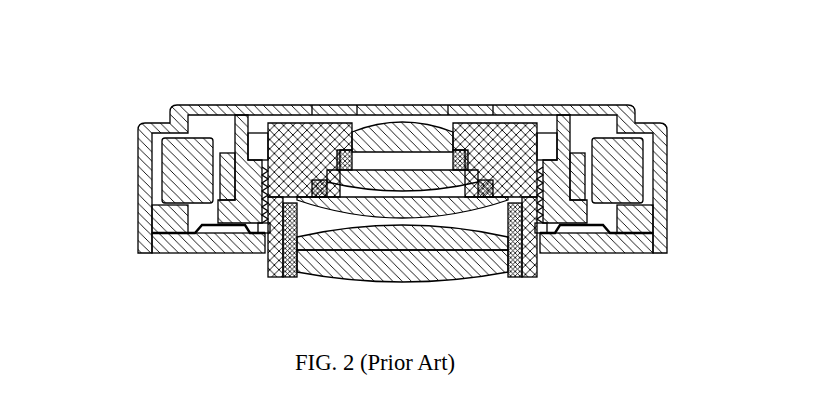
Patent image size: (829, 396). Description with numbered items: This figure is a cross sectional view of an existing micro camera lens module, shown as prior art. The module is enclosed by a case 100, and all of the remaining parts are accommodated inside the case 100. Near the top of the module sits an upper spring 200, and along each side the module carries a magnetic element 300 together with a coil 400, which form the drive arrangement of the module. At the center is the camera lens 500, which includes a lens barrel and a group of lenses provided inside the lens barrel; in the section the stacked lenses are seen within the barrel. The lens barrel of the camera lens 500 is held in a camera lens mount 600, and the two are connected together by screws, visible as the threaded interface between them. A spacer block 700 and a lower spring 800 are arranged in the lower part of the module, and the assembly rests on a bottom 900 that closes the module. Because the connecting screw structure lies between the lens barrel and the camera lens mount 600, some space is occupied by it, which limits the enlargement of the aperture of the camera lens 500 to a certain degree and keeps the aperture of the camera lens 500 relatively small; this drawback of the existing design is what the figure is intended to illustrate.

The case 100 is at (663, 150).
The upper spring 200 is at (250, 130).
The magnetic element 300 is at (180, 178).
The coil 400 is at (223, 153).
The camera lens 500 is at (268, 268).
The camera lens mount 600 is at (545, 147).
The spacer block 700 is at (167, 218).
The lower spring 800 is at (133, 232).
The bottom 900 is at (168, 253).